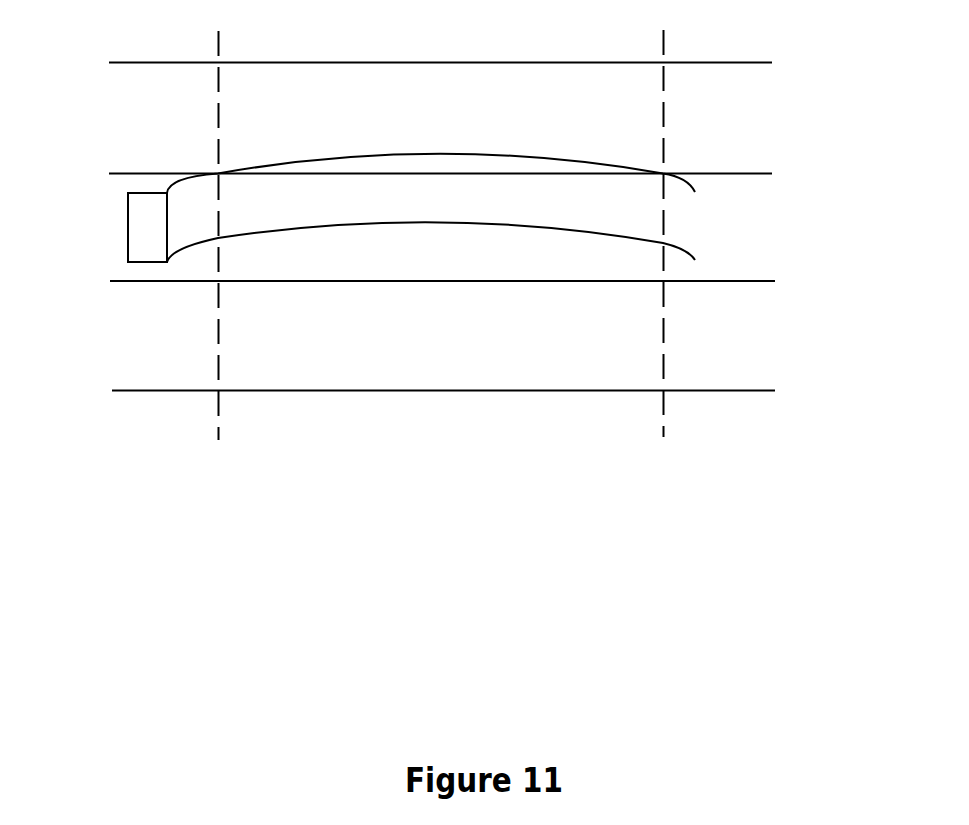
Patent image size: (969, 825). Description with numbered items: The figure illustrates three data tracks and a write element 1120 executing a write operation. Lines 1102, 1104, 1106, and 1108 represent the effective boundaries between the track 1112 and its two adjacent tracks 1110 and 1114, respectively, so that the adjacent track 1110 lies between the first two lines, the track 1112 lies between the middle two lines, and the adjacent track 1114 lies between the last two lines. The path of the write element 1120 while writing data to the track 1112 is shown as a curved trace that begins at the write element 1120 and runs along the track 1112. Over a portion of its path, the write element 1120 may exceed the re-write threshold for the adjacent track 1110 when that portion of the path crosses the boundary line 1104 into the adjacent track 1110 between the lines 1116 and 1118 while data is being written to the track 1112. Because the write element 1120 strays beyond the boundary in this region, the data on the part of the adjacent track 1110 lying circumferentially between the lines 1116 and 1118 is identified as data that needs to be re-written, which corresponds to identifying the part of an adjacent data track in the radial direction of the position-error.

The line 1102 is at (473, 62).
The line 1104 is at (473, 173).
The line 1106 is at (474, 280).
The line 1108 is at (475, 390).
The adjacent track 1110 is at (772, 120).
The track 1112 is at (772, 230).
The adjacent track 1114 is at (774, 340).
The line 1116 is at (218, 251).
The line 1118 is at (670, 250).
The write element 1120 is at (127, 232).